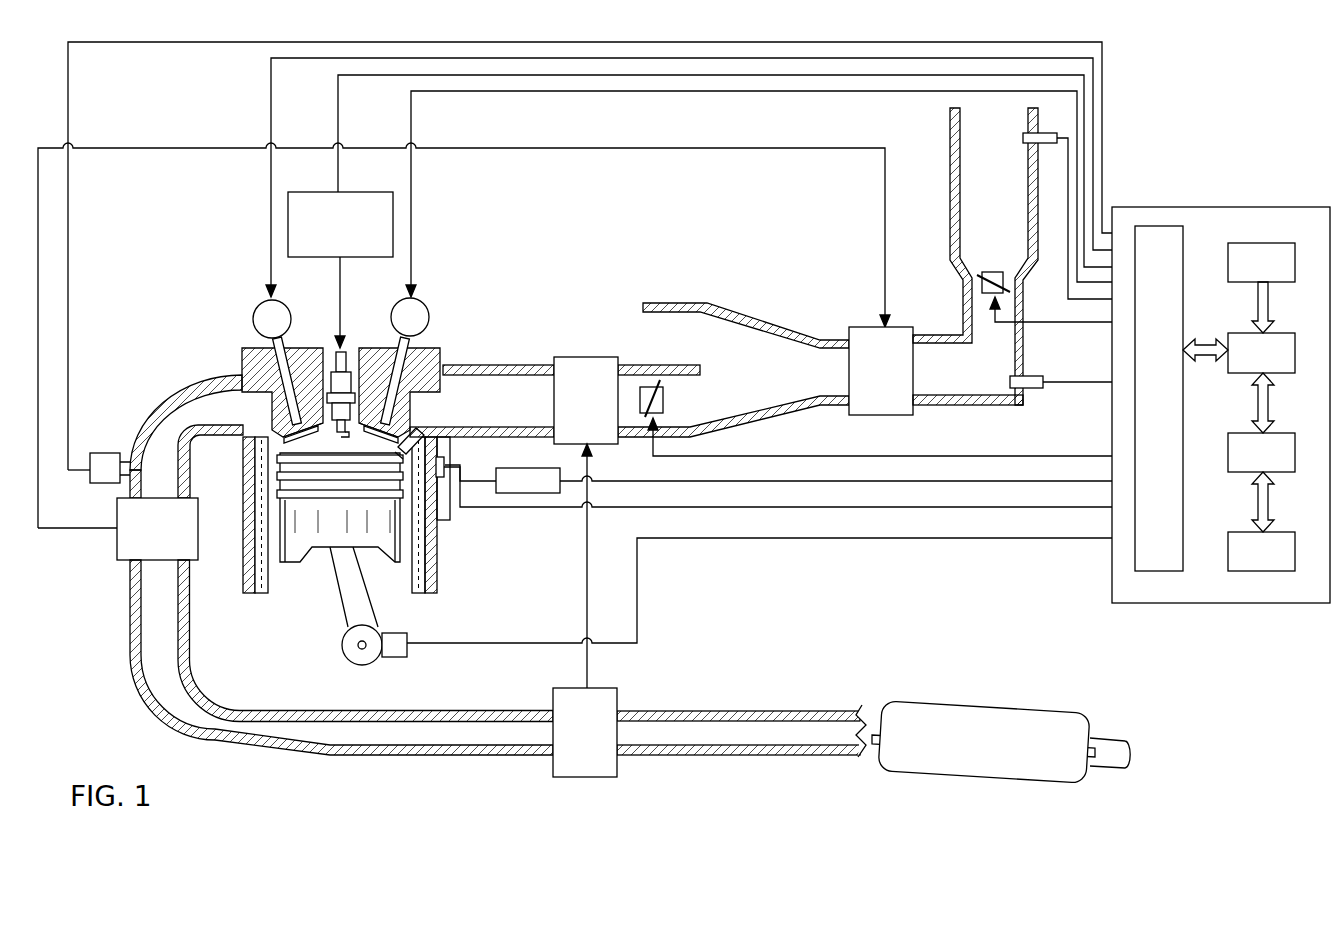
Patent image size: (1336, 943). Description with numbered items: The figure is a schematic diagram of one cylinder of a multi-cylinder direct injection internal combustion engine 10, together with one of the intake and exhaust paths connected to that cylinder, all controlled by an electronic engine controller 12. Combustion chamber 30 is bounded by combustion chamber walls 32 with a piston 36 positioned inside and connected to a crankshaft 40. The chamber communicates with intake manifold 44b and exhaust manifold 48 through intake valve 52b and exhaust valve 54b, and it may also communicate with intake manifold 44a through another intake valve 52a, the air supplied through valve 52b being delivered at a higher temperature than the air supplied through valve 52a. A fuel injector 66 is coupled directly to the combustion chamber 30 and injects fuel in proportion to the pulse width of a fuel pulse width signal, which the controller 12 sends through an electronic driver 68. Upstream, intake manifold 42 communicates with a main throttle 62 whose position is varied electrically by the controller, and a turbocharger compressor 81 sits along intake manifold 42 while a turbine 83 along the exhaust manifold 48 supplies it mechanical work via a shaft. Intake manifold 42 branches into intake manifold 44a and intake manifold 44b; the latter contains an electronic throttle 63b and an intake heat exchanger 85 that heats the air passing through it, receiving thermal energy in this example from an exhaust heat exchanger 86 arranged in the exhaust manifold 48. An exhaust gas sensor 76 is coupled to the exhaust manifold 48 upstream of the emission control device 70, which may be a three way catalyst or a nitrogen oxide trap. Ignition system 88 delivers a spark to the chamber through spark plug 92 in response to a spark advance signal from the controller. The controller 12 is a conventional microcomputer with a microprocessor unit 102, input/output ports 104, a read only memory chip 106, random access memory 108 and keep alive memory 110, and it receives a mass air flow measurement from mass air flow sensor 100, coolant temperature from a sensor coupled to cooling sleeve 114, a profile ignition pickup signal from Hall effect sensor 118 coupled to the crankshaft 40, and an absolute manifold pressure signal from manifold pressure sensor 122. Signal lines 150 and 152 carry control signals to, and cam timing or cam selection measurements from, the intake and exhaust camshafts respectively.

The direct injection internal combustion engine 10 is at (212, 298).
The electronic engine controller 12 is at (1221, 387).
The combustion chamber 30 is at (340, 445).
The combustion chamber walls 32 is at (290, 582).
The piston 36 is at (343, 540).
The crankshaft 40 is at (352, 665).
The intake manifold 42 is at (948, 385).
The intake manifold 44a is at (655, 350).
The intake manifold 44b is at (533, 412).
The exhaust manifold 48 is at (222, 415).
The intake valve 52a is at (643, 345).
The intake valve 52b is at (392, 425).
The exhaust valve 54b is at (290, 425).
The main throttle 62 is at (993, 270).
The electronic throttle 63b is at (688, 424).
The fuel injector 66 is at (415, 456).
The electronic driver 68 is at (516, 492).
The emission control device 70 is at (1062, 710).
The exhaust gas sensor 76 is at (93, 479).
The compressor 81 is at (869, 382).
The turbine 83 is at (146, 541).
The intake heat exchanger 85 is at (574, 411).
The exhaust heat exchanger 86 is at (573, 744).
The ignition system 88 is at (330, 192).
The spark plug 92 is at (345, 362).
The mass air flow sensor 100 is at (1026, 134).
The microprocessor unit 102 is at (1278, 333).
The input/output ports 104 is at (1185, 240).
The read only memory chip 106 is at (1268, 243).
The random access memory 108 is at (1278, 433).
The keep alive memory 110 is at (1278, 532).
The cooling sleeve 114 is at (420, 546).
The Hall effect sensor 118 is at (397, 658).
The manifold pressure sensor 122 is at (1012, 388).
The signal line 150 is at (411, 222).
The signal line 152 is at (270, 232).